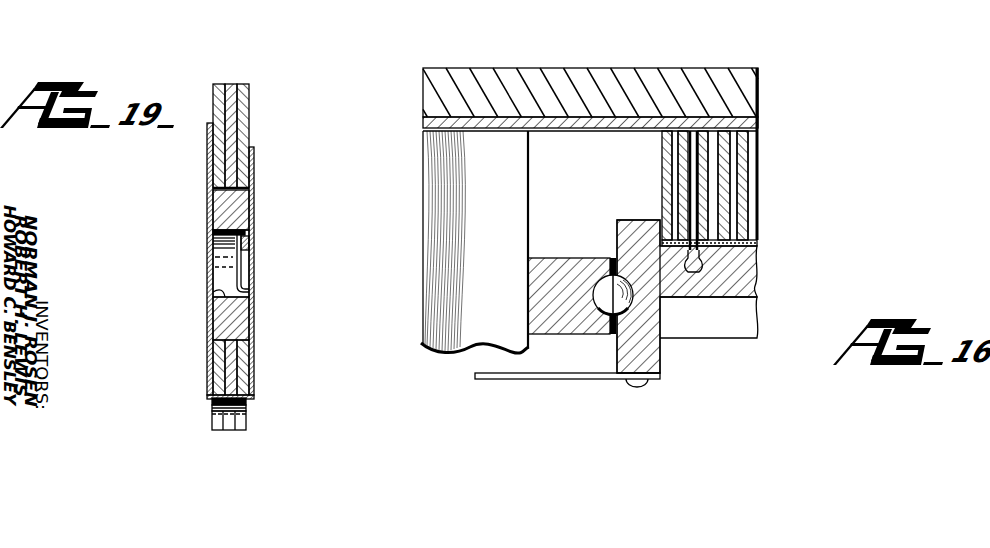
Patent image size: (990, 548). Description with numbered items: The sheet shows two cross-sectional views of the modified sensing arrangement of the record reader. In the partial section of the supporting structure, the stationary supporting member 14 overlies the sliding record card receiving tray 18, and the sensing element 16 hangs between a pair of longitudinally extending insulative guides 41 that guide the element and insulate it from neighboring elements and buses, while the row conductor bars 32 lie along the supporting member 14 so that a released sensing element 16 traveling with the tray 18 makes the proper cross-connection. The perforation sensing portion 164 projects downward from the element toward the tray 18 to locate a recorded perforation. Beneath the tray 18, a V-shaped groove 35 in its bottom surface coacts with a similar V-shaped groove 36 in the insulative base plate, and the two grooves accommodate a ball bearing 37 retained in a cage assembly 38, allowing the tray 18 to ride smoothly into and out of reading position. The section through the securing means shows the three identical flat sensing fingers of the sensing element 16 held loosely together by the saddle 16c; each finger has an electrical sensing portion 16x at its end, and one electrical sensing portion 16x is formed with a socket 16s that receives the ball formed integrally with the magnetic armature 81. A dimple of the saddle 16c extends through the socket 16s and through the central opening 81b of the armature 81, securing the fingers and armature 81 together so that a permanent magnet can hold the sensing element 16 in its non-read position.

In FIG. 19, the electrical sensing portion 16x is at (218, 84).
In FIG. 19, the saddle 16c is at (254, 153).
In FIG. 19, the armature 81 is at (230, 200).
In FIG. 19, the central opening 81b is at (215, 287).
In FIG. 19, the socket portion 16s is at (222, 329).
In FIG. 16, the supporting member 14 is at (740, 98).
In FIG. 16, the row conductor bars 32 is at (758, 125).
In FIG. 16, the sensing element 16 is at (690, 163).
In FIG. 16, the insulative guides 41 is at (705, 200).
In FIG. 16, the perforation sensing portion 164 is at (622, 250).
In FIG. 16, the tray 18 is at (758, 263).
In FIG. 16, the V-shaped grooves 35 is at (638, 298).
In FIG. 16, the ball bearings 37 is at (636, 312).
In FIG. 16, the V-shaped grooves 36 is at (577, 333).
In FIG. 16, the cage assemblies 38 is at (611, 341).